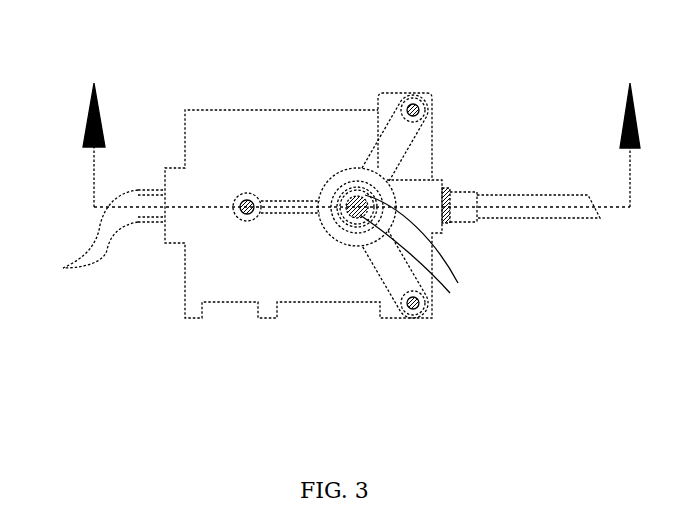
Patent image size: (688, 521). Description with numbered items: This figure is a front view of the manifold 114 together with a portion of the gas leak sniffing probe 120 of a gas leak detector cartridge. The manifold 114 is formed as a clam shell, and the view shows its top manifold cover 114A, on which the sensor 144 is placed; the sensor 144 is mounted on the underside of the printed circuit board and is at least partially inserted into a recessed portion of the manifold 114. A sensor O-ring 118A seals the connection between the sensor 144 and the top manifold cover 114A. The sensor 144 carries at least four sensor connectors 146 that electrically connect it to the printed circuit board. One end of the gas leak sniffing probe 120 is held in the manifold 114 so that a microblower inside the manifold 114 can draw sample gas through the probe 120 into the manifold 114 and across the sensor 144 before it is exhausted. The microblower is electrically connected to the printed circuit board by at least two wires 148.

The manifold 114 is at (150, 100).
The top manifold cover 114A is at (330, 282).
The sensor O-ring 118A is at (352, 195).
The gas leak sniffing probe 120 is at (571, 239).
The sensor 144 is at (358, 190).
The sensor connectors 146 is at (462, 290).
The wires 148 is at (95, 233).